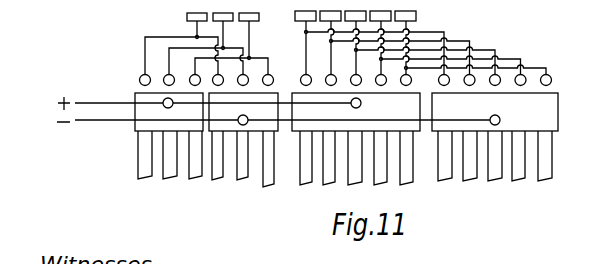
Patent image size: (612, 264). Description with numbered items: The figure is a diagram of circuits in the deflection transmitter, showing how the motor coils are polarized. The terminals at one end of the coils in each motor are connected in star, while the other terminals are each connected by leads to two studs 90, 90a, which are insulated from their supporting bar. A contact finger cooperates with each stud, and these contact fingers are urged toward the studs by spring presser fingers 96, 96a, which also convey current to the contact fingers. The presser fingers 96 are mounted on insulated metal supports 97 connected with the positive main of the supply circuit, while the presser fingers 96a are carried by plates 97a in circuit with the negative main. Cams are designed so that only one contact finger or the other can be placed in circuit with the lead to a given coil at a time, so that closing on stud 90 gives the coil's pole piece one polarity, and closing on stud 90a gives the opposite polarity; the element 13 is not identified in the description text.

The electromagnet 13 is at (355, 10).
The stud 90 is at (192, 52).
The stud 90a is at (248, 73).
The spring presser finger 96 is at (143, 179).
The spring presser finger 96a is at (220, 180).
The insulated metal support 97 is at (140, 126).
The plate 97a is at (262, 112).